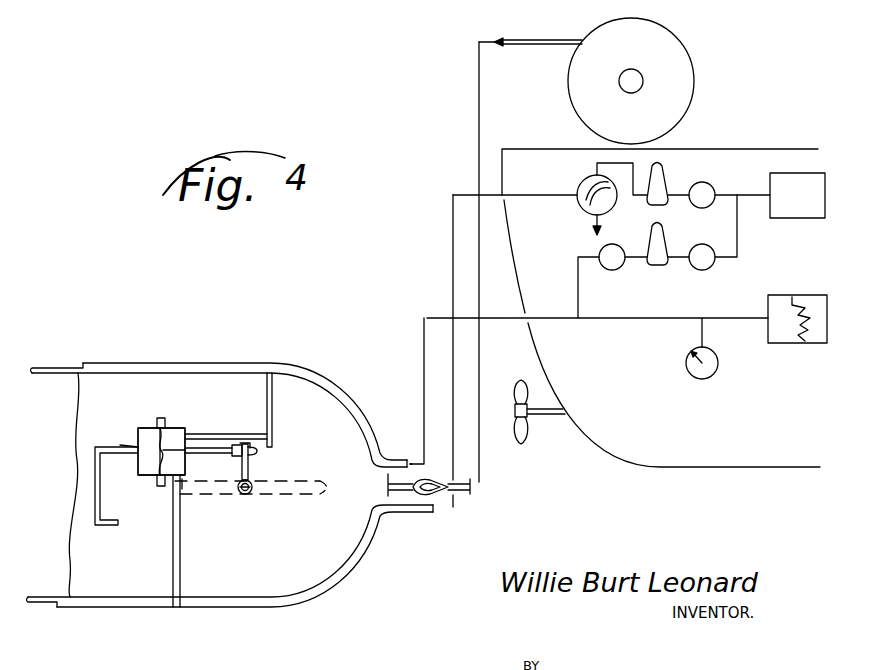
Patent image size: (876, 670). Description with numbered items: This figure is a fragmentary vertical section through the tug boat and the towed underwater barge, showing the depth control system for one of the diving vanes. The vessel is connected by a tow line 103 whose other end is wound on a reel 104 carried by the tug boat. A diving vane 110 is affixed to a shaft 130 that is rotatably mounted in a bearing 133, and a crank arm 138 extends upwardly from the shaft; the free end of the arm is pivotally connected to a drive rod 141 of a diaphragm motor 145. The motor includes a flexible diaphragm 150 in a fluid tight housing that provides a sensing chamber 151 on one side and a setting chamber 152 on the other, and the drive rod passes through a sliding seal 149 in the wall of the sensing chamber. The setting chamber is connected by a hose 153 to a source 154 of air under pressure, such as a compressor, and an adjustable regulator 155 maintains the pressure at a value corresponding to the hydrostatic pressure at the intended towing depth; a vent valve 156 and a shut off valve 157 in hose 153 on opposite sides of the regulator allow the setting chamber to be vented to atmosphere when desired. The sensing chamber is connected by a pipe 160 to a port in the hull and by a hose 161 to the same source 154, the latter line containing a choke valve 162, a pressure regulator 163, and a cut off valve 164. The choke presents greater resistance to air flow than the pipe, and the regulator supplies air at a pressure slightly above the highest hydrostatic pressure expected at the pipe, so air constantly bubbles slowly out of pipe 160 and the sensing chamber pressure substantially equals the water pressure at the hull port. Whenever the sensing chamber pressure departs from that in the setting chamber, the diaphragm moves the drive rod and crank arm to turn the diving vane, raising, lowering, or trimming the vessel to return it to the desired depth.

The tow line 103 is at (476, 479).
The reel 104 is at (673, 77).
The diving vane 110 is at (322, 498).
The shaft 130 is at (250, 494).
The bearing 133 is at (238, 495).
The crank arm 138 is at (258, 455).
The drive rod 141 is at (217, 450).
The diaphragm motor 145 is at (130, 430).
The sliding seal 149 is at (197, 433).
The flexible diaphragm 150 is at (162, 457).
The sensing chamber 151 is at (175, 430).
The setting chamber 152 is at (120, 445).
The hose 153 is at (95, 487).
The source of air under pressure 154 is at (793, 173).
The adjustable regulator 155 is at (670, 180).
The vent valve 156 is at (580, 185).
The shut off valve 157 is at (706, 183).
The pipe 160 is at (182, 577).
The hose 161 is at (421, 450).
The choke valve 162 is at (617, 269).
The pressure regulator 163 is at (667, 233).
The cut off valve 164 is at (708, 268).